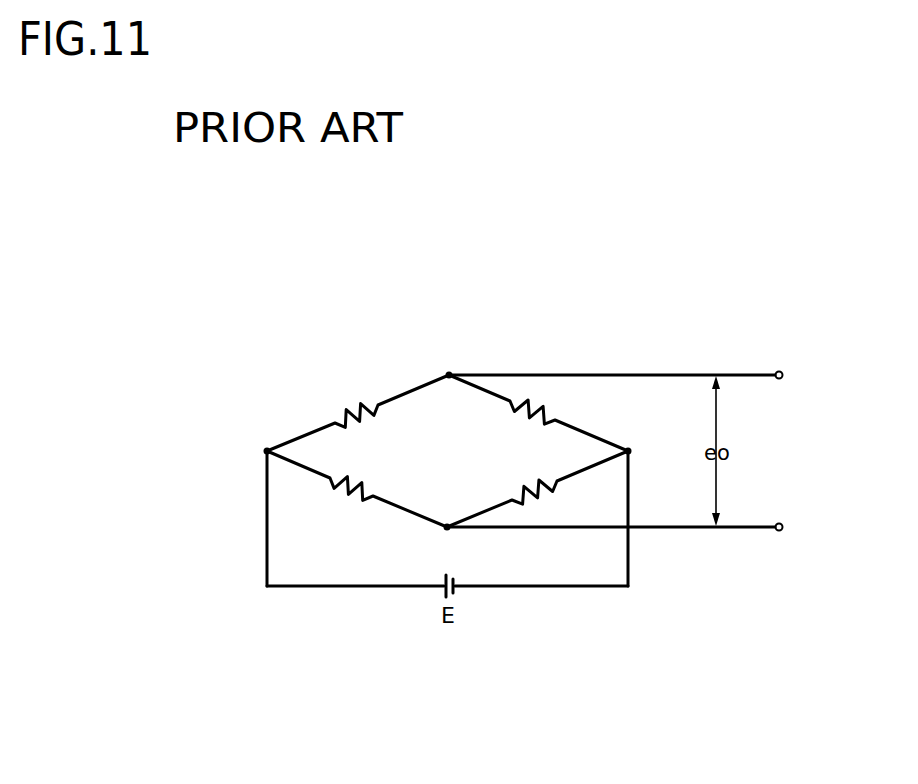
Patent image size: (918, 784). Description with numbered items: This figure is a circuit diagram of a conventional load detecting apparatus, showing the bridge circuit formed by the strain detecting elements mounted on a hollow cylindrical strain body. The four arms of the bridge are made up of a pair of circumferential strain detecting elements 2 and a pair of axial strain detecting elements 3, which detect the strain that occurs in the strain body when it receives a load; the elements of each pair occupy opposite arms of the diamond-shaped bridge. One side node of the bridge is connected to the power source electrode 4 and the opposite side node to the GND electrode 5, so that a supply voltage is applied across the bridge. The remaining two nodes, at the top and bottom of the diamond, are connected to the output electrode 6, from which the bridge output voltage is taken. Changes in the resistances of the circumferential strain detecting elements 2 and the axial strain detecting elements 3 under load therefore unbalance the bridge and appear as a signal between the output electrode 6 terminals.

The circumferential strain detecting element 2 is at (537, 410).
The axial strain detecting element 3 is at (370, 405).
The power source electrode 4 is at (267, 451).
The GND electrode 5 is at (628, 451).
The output electrode 6 is at (448, 373).